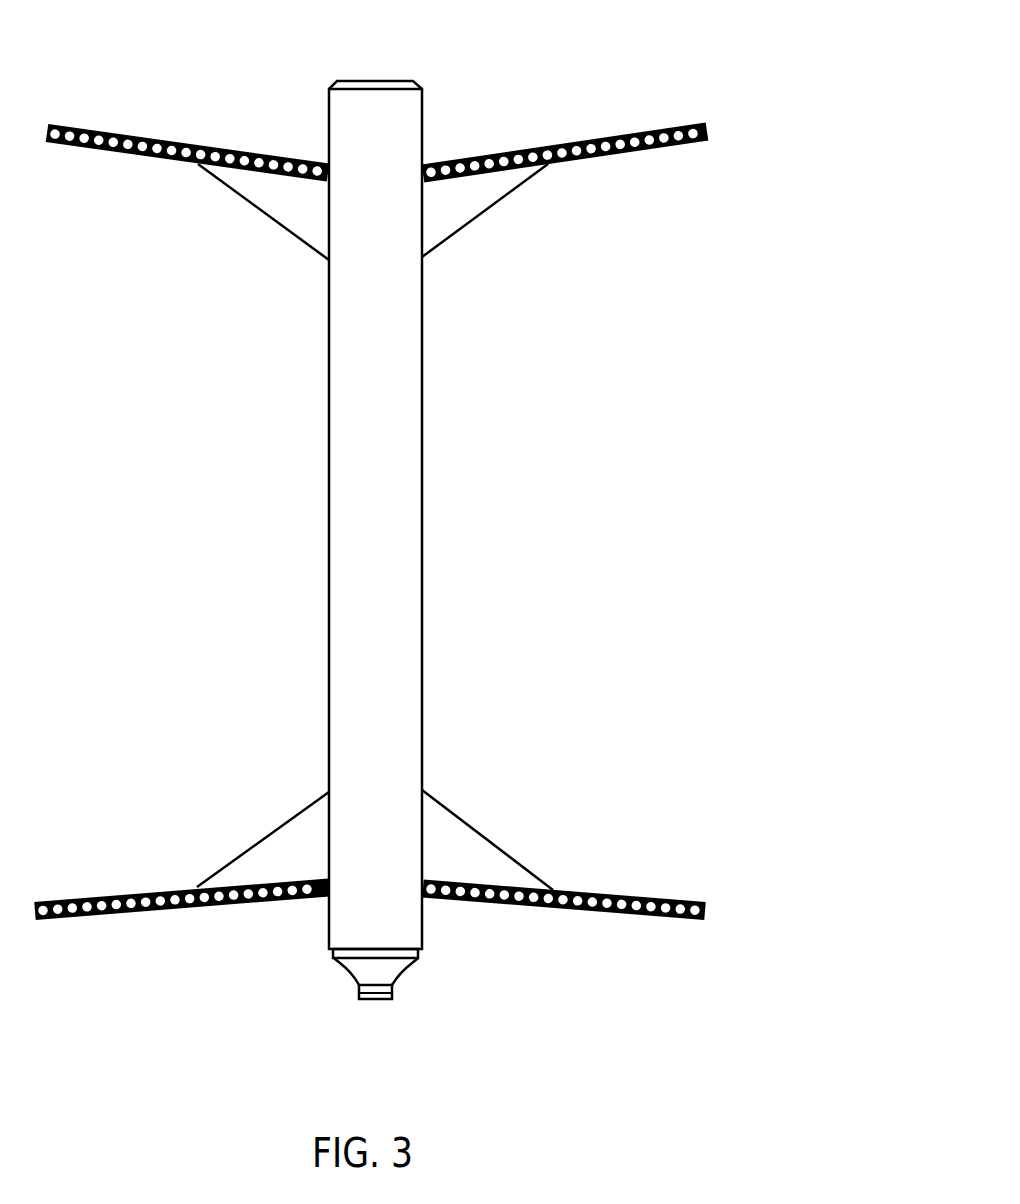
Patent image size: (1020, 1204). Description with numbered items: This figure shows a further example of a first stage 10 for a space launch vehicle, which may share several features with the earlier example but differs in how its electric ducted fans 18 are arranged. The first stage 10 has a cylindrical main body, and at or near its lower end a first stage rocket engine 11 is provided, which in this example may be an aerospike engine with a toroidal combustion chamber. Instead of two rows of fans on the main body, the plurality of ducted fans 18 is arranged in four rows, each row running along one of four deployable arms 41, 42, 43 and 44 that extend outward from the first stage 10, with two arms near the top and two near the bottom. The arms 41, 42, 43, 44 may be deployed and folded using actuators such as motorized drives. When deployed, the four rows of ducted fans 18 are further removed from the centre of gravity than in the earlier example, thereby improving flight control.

The first stage 10 is at (422, 563).
The first stage rocket engine 11 is at (358, 987).
The electric ducted fans 18 is at (100, 147).
The deployable arm 41 is at (638, 895).
The deployable arm 42 is at (82, 898).
The deployable arm 43 is at (635, 130).
The deployable arm 44 is at (88, 127).